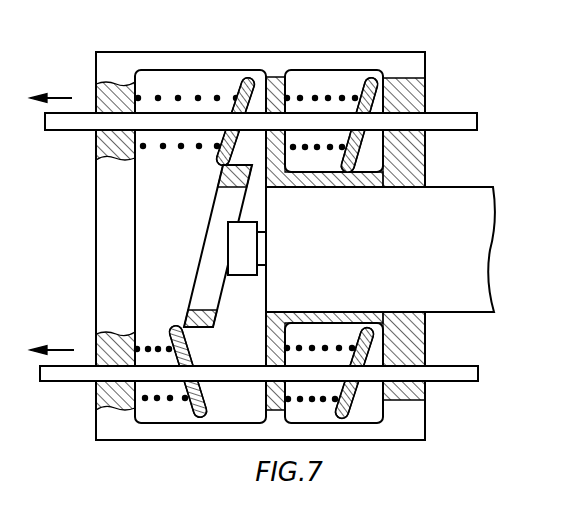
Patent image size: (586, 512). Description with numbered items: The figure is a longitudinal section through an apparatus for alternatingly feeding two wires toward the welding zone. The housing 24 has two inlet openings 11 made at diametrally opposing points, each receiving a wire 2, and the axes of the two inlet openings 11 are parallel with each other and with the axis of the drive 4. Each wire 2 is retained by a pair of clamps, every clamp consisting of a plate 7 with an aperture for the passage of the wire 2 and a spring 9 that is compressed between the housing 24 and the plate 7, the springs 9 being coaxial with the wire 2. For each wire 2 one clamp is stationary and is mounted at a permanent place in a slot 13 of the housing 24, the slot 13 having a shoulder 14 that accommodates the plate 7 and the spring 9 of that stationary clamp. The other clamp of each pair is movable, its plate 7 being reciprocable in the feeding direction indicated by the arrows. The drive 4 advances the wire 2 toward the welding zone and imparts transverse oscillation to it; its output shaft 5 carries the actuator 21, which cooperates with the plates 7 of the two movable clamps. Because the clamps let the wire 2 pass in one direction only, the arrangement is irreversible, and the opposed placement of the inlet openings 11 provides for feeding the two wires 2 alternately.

The housing 24 is at (111, 67).
The spring 9 is at (179, 92).
The plate 7 is at (240, 78).
The inlet opening 11 is at (398, 110).
The wire 2 is at (452, 121).
The slot 13 is at (373, 147).
The shoulder 14 is at (358, 174).
The output shaft 5 is at (262, 245).
The drive 4 is at (481, 278).
The actuator 21 is at (210, 300).